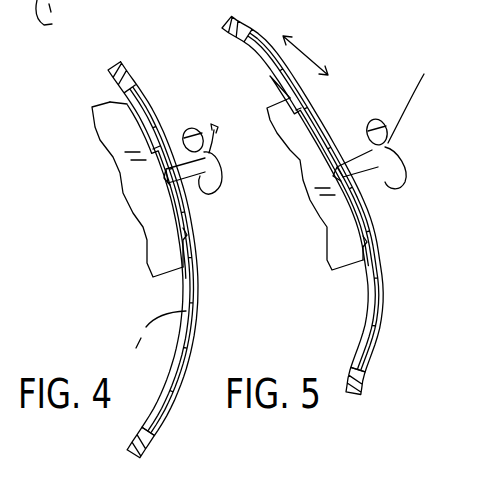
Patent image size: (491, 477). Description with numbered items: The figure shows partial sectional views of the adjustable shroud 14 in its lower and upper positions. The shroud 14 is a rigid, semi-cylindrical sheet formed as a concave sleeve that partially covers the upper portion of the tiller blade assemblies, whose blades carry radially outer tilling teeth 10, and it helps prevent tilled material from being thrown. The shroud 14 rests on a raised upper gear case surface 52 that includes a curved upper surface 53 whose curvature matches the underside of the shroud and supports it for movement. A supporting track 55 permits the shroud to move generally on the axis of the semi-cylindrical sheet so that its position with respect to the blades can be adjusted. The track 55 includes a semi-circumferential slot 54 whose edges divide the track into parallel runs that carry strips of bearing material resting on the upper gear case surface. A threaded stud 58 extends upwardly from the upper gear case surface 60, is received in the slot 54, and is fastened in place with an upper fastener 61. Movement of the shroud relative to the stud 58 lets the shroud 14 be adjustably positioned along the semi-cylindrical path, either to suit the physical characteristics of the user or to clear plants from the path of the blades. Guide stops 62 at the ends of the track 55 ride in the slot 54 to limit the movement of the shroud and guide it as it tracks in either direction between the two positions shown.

In FIG. 4, the tilling teeth 10 is at (58, 23).
In FIG. 4, the shroud 14 is at (200, 312).
In FIG. 5, the shroud 14 is at (378, 299).
In FIG. 4, the raised upper gear case surface 52 is at (143, 247).
In FIG. 5, the raised upper gear case surface 52 is at (312, 235).
In FIG. 4, the curved upper surface 53 is at (187, 219).
In FIG. 4, the semi-circumferential slot 54 is at (176, 384).
In FIG. 5, the supporting track 55 is at (362, 317).
In FIG. 4, the threaded stud 58 is at (207, 156).
In FIG. 5, the threaded stud 58 is at (395, 149).
In FIG. 5, the upper gear case surface 60 is at (378, 212).
In FIG. 5, the upper fastener 61 is at (409, 108).
In FIG. 4, the guide stops 62 is at (135, 115).
In FIG. 5, the guide stops 62 is at (418, 241).